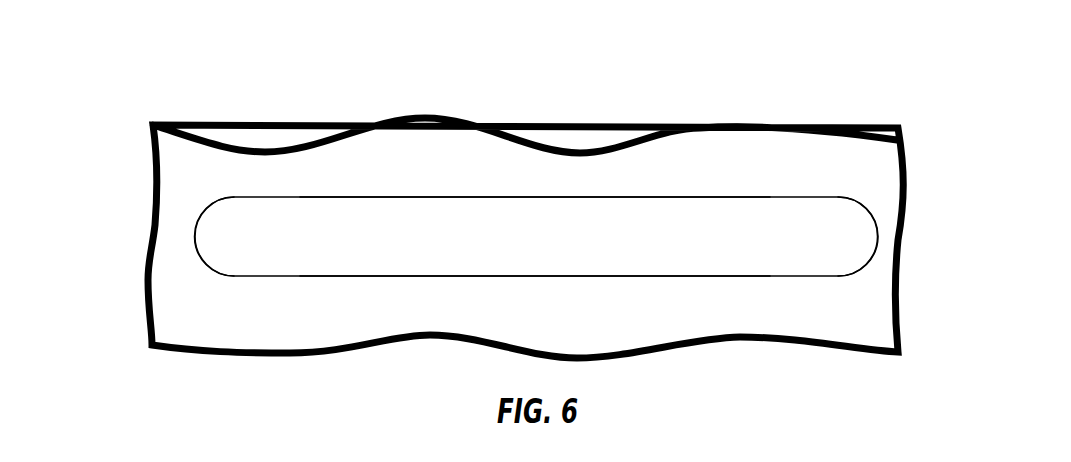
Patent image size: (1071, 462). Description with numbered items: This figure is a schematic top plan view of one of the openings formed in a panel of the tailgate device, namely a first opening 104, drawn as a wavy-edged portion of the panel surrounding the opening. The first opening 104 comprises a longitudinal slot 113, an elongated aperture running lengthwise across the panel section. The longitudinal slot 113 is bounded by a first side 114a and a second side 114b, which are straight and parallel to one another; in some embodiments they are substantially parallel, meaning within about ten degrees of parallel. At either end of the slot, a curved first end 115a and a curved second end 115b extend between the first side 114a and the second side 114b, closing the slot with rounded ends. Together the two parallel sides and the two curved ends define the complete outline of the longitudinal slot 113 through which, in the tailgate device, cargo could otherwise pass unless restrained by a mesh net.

The first opening 104 is at (772, 166).
The longitudinal slot 113 is at (538, 248).
The first side 114a is at (632, 198).
The second side 114b is at (648, 276).
The first end 115a is at (205, 218).
The second end 115b is at (861, 217).